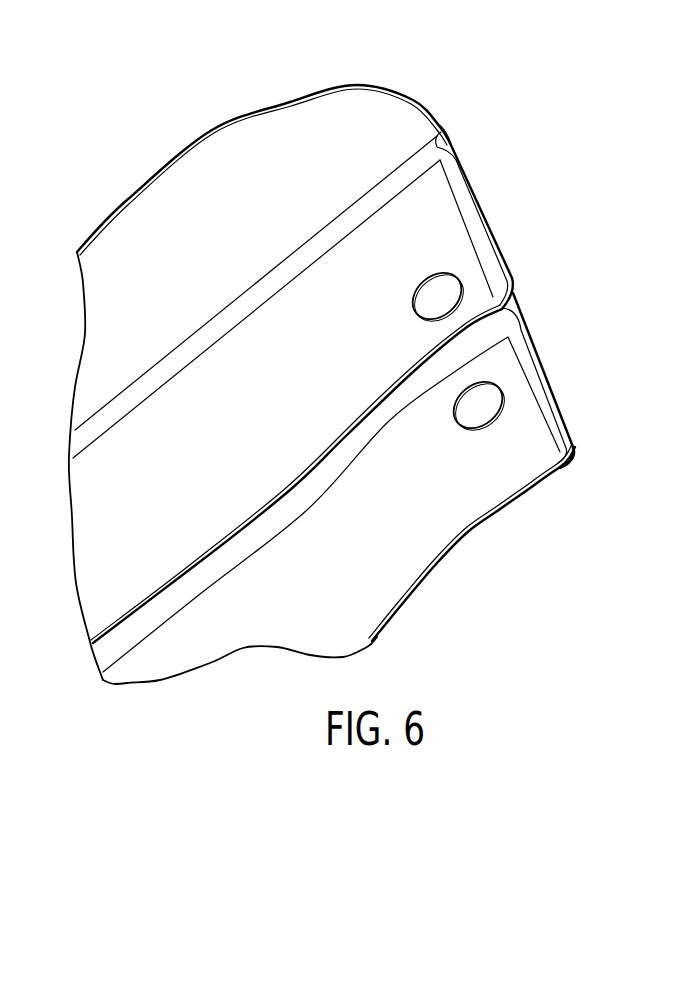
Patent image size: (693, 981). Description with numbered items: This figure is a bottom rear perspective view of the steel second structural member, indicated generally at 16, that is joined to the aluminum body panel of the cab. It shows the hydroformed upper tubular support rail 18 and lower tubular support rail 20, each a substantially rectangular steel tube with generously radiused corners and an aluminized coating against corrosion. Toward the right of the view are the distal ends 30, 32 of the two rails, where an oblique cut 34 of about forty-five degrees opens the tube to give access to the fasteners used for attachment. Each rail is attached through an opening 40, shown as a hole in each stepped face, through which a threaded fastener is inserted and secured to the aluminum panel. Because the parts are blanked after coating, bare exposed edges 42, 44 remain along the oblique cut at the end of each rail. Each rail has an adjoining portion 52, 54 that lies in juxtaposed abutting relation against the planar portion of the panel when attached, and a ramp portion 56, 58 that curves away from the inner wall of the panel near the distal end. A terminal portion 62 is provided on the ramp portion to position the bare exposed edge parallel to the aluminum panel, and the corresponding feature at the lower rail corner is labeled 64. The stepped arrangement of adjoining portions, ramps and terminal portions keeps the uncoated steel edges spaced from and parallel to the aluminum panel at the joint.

The window assembly 16 is at (547, 110).
The upper tubular support rail 18 is at (203, 162).
The lower tubular support rail 20 is at (440, 497).
The distal end of upper tubular support rail 30 is at (460, 207).
The distal end of lower tubular support rail 32 is at (533, 360).
The oblique cut 34 is at (317, 90).
The opening 40 is at (426, 309).
The bare exposed edge of upper tubular support rail 42 is at (493, 236).
The bare exposed edge of lower tubular support rail 44 is at (557, 392).
The adjoining portion of upper tubular support rail 52 is at (410, 257).
The adjoining portion of lower tubular support rail 54 is at (483, 467).
The ramp portion of upper tubular support rail 56 is at (457, 182).
The ramp portion of lower tubular support rail 58 is at (520, 332).
The terminal portion 62 is at (453, 143).
The corner of second panel portion 64 is at (575, 432).